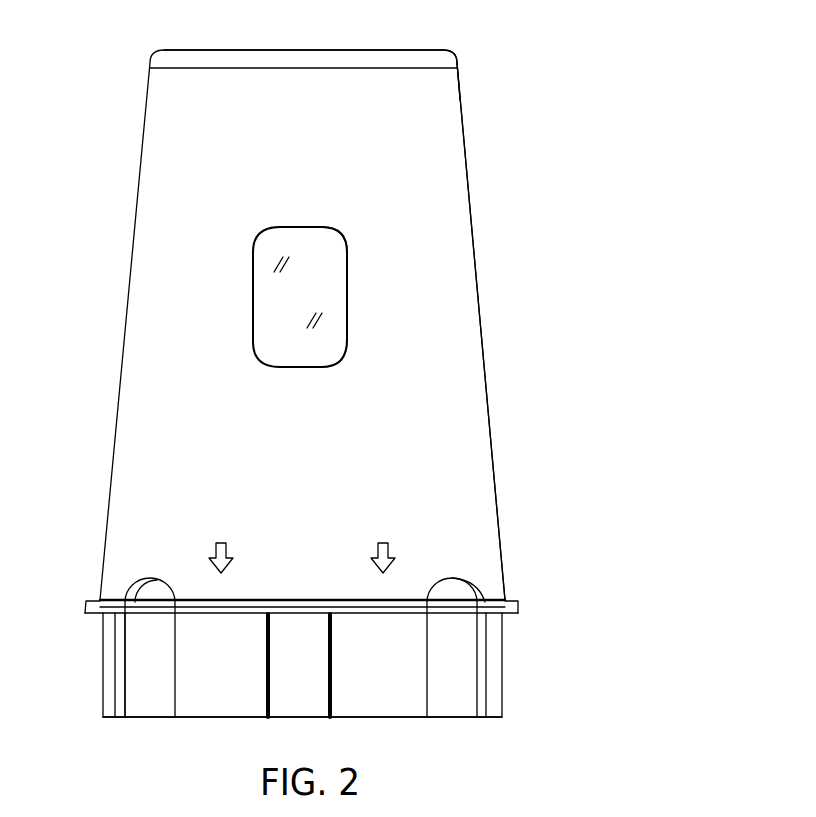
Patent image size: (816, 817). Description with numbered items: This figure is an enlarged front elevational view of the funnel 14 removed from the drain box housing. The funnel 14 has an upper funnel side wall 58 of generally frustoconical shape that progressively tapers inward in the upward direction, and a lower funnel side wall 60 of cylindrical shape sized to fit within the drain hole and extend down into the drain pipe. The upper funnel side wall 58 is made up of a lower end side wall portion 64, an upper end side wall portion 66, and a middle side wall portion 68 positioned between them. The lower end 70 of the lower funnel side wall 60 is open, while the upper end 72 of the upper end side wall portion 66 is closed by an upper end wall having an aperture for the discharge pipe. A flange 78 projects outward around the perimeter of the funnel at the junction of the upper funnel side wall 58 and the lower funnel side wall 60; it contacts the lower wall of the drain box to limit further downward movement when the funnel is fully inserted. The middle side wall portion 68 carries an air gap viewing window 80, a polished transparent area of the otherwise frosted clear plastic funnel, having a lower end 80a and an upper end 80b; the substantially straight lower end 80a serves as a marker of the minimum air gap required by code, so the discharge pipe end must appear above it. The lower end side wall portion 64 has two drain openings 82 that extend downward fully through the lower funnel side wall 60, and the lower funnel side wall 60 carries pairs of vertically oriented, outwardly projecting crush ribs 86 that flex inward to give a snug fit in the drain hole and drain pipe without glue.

The funnel 14 is at (616, 118).
The upper funnel side wall 58 is at (488, 433).
The lower funnel side wall 60 is at (493, 655).
The lower end side wall portion 64 is at (478, 512).
The upper end side wall portion 66 is at (430, 118).
The middle side wall portion 68 is at (453, 315).
The lower end 70 is at (400, 717).
The upper end 72 is at (368, 50).
The flange 78 is at (515, 612).
The air gap viewing window 80 is at (305, 297).
The lower end 80a is at (288, 357).
The upper end 80b is at (300, 240).
The drain openings 82 is at (152, 662).
The crush ribs 86 is at (328, 682).